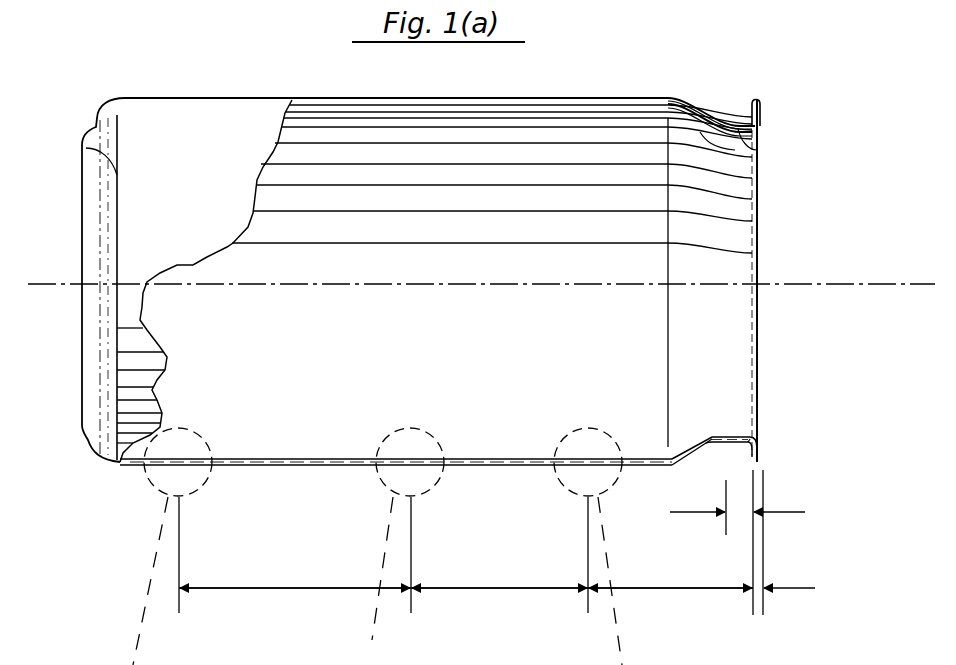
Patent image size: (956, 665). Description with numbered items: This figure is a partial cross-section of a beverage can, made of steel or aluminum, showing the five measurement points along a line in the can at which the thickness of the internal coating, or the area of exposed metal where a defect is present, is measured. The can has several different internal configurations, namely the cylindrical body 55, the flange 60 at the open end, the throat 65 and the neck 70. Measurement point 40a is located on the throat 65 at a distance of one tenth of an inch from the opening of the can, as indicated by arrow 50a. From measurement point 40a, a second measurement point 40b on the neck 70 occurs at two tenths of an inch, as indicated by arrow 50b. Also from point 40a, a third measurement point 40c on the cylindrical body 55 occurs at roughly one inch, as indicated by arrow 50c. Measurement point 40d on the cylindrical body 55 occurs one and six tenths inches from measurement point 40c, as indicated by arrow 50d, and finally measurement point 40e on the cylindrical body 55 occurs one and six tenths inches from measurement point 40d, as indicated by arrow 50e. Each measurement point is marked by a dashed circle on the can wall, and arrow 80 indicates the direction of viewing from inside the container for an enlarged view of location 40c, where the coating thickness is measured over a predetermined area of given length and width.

The cylindrical body 55 is at (520, 100).
The flange 60 is at (762, 118).
The throat 65 is at (760, 146).
The neck 70 is at (730, 140).
The arrow 80 is at (587, 375).
The measurement point 40a is at (748, 436).
The second measurement point 40b is at (722, 436).
The third measurement point 40c is at (588, 457).
The measurement point 40d is at (411, 457).
The measurement point 40e is at (178, 457).
The arrow 50a is at (757, 604).
The arrow 50b is at (738, 516).
The arrow 50c is at (694, 592).
The arrow 50d is at (526, 592).
The arrow 50e is at (318, 592).